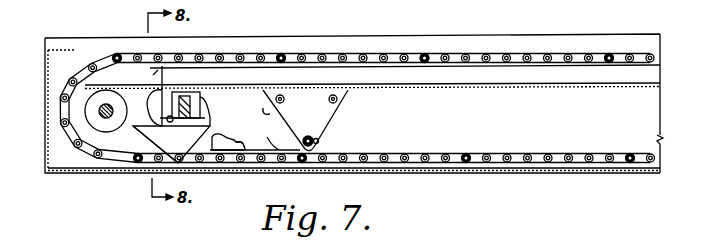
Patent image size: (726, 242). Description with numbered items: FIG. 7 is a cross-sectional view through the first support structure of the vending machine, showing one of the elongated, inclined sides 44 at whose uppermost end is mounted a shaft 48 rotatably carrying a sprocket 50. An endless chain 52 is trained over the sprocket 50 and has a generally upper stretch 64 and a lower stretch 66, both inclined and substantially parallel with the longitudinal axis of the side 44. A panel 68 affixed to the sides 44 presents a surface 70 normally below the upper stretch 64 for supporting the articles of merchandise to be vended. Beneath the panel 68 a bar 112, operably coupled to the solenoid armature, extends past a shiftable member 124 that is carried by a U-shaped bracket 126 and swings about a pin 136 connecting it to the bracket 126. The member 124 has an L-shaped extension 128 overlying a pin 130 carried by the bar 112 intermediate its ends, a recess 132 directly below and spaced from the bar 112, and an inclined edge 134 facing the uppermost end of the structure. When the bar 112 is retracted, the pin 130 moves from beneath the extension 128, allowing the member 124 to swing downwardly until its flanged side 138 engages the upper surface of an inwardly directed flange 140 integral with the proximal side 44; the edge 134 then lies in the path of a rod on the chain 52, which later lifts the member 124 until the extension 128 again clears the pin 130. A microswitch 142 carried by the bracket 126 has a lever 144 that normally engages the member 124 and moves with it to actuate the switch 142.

The sides 44 is at (523, 50).
The shaft 48 is at (98, 113).
The sprockets 50 is at (110, 134).
The chain 52 is at (428, 50).
The upper stretch 64 is at (333, 50).
The lower stretch 66 is at (416, 151).
The panel 68 is at (512, 88).
The surface 70 is at (470, 84).
The bar 112 is at (211, 134).
The shiftable member 124 is at (272, 165).
The U-shaped bracket 126 is at (318, 118).
The L-shaped extension 128 is at (200, 103).
The pin 130 is at (178, 88).
The recess 132 is at (176, 141).
The inclined edge 134 is at (157, 143).
The pin 136 is at (315, 142).
The flanged side 138 is at (235, 150).
The flange 140 is at (499, 174).
The microswitch 142 is at (343, 107).
The lever 144 is at (268, 114).